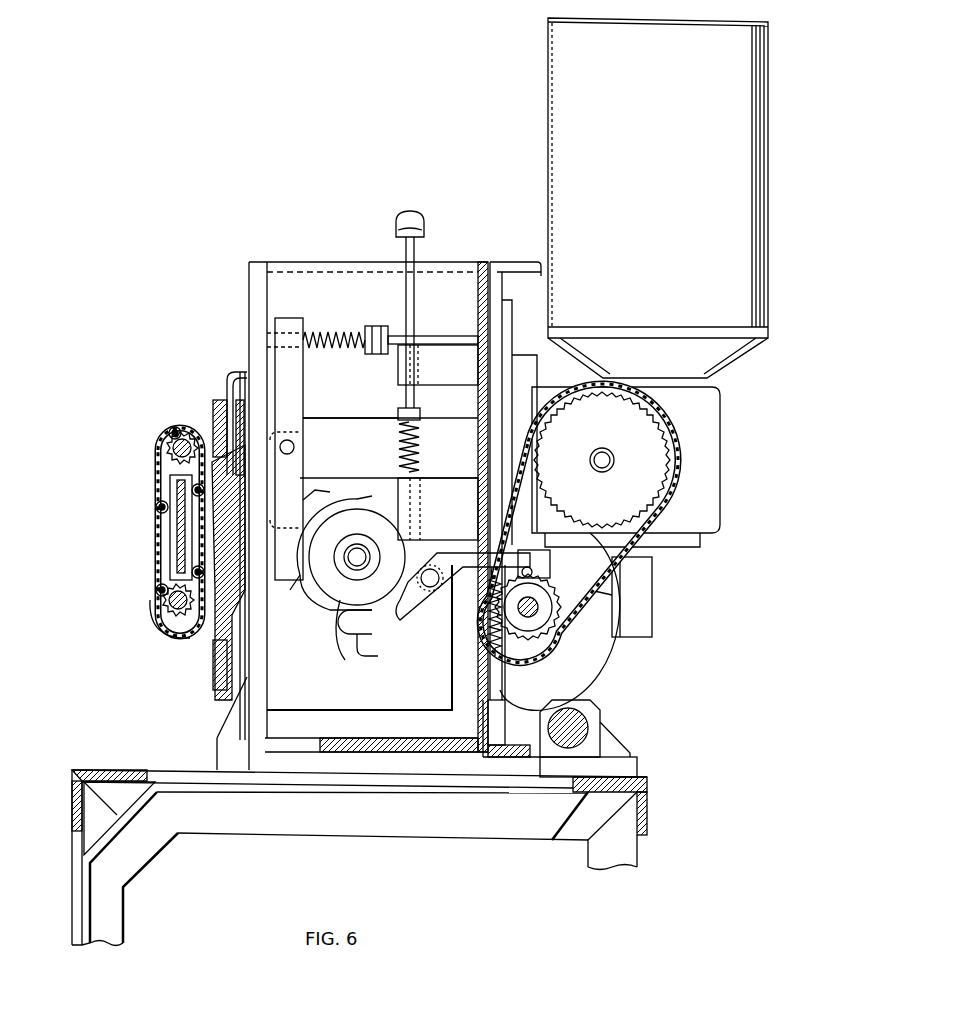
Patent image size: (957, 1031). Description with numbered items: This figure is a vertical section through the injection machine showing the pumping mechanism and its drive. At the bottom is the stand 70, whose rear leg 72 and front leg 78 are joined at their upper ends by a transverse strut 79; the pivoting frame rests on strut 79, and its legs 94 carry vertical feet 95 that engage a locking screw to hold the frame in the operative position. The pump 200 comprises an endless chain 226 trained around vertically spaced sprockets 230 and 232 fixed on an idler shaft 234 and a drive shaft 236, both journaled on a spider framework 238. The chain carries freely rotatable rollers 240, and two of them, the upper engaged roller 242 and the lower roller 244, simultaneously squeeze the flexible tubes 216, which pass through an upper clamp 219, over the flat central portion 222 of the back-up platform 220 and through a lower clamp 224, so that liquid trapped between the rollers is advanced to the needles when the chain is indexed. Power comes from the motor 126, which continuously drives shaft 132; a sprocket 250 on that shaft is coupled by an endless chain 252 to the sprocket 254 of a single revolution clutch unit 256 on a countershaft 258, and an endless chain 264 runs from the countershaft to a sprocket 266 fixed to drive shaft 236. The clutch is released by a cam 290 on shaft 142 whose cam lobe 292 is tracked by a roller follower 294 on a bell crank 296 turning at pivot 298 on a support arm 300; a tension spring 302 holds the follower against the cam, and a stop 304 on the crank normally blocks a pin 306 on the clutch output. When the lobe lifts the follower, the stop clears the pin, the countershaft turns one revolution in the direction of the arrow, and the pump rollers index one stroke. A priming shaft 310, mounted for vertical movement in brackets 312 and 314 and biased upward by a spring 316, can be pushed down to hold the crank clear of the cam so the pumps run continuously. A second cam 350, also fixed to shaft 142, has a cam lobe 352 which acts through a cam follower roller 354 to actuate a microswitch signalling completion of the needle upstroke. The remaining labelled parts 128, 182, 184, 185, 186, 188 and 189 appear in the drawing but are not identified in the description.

The stand 70 is at (650, 856).
The rear leg 72 is at (650, 808).
The front leg 78 is at (90, 912).
The transverse strut 79 is at (270, 822).
The leg 94 is at (110, 768).
The vertical foot 95 is at (72, 842).
The motor 126 is at (768, 161).
The housing 128 is at (720, 450).
The shaft 132 is at (606, 465).
The shaft 142 is at (352, 570).
The bracket 182 is at (330, 500).
The plate 184 is at (303, 380).
The plate 185 is at (377, 432).
The link 186 is at (315, 491).
The spring 188 is at (328, 332).
The nut 189 is at (390, 328).
The pump unit 200 is at (161, 526).
The flexible tubes 216 is at (235, 370).
The upper clamp 219 is at (214, 400).
The back-up platform 220 is at (235, 590).
The flat central portion 222 is at (175, 540).
The lower clamp 224 is at (215, 665).
The endless chain 226 is at (158, 492).
The sprocket 230 is at (162, 464).
The sprocket 232 is at (165, 594).
The idler shaft 234 is at (168, 444).
The drive shaft 236 is at (168, 607).
The spider framework 238 is at (160, 512).
The rollers 240 is at (172, 428).
The upper engaged roller 242 is at (204, 490).
The lower roller 244 is at (204, 572).
The sprocket 250 is at (640, 510).
The endless chain 252 is at (620, 570).
The sprocket 254 is at (612, 595).
The single revolution clutch unit 256 is at (573, 626).
The countershaft 258 is at (528, 617).
The endless chain 264 is at (158, 592).
The sprocket 266 is at (170, 642).
The cam 290 is at (345, 660).
The cam lobe 292 is at (290, 590).
The roller follower 294 is at (356, 640).
The bell crank 296 is at (410, 640).
The pivot 298 is at (445, 595).
The support arm 300 is at (447, 548).
The tension spring 302 is at (490, 620).
The stop 304 is at (532, 572).
The pin 306 is at (522, 560).
The shaft 310 is at (402, 243).
The bracket 312 is at (446, 357).
The bracket 314 is at (414, 488).
The spring 316 is at (416, 445).
The cam 350 is at (330, 588).
The cam lobe 352 is at (366, 492).
The cam follower roller 354 is at (357, 545).